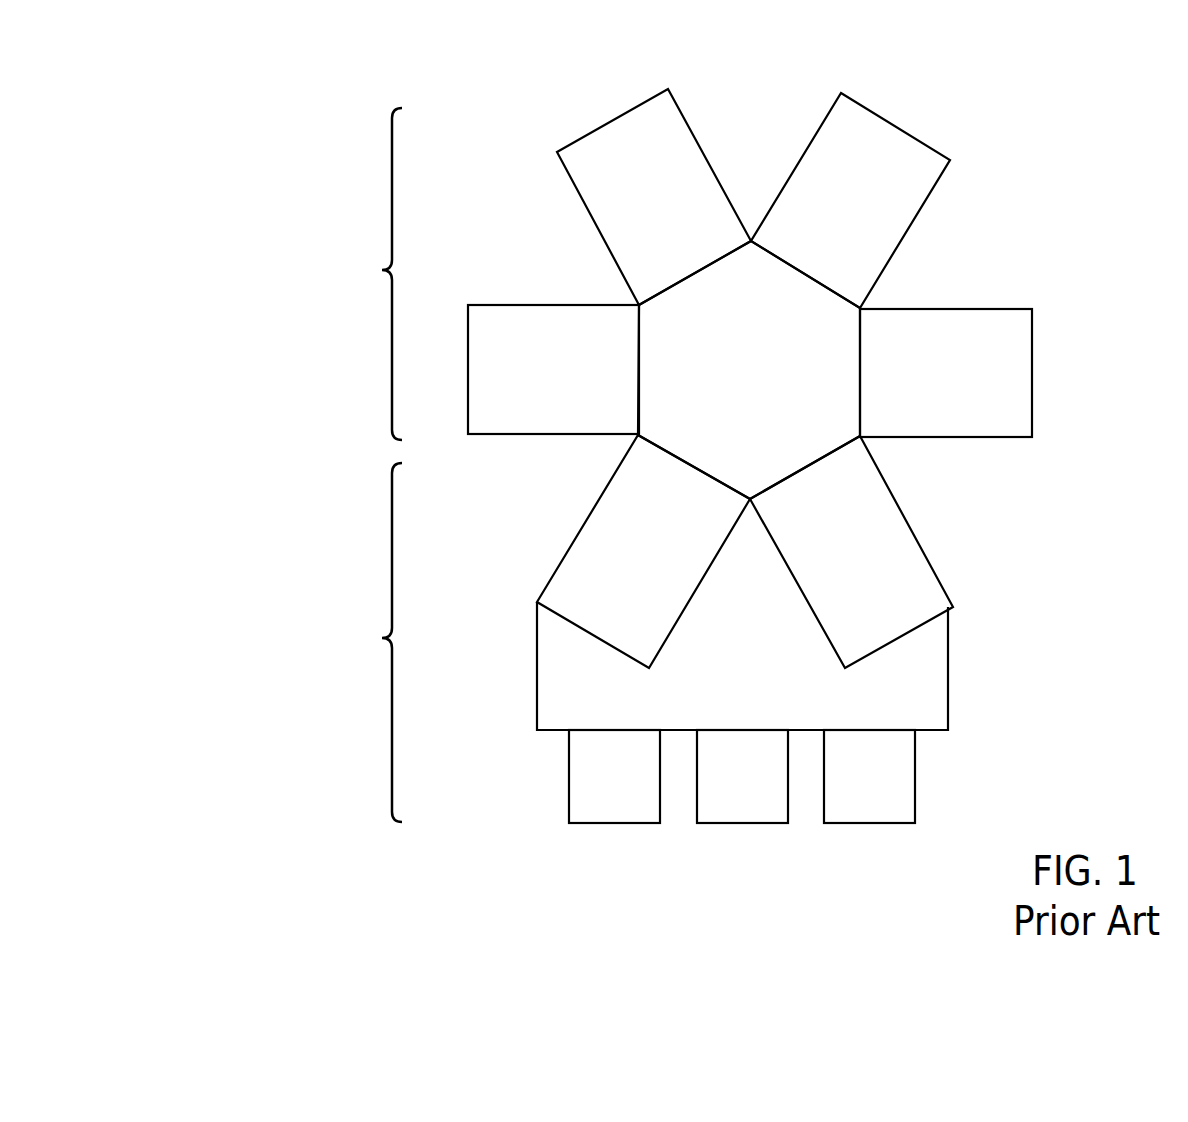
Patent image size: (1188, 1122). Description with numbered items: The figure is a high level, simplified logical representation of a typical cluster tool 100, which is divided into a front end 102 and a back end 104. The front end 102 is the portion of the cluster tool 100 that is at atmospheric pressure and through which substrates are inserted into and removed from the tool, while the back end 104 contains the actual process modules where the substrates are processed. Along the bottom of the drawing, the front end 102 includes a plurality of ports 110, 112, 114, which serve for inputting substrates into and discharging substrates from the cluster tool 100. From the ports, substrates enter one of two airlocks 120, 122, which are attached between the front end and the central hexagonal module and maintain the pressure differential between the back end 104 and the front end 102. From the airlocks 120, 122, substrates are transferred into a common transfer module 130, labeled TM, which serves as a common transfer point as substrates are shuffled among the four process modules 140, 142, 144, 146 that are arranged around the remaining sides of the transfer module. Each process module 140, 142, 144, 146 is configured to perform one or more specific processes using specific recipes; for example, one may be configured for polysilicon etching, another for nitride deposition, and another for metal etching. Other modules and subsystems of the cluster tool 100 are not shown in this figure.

The cluster tool 100 is at (273, 66).
The front end 102 is at (336, 642).
The back end 104 is at (338, 274).
The port 110 is at (614, 776).
The port 112 is at (742, 776).
The port 114 is at (869, 776).
The airlock 120 is at (643, 551).
The airlock 122 is at (851, 552).
The transfer module 130 is at (749, 370).
The process module 140 is at (553, 369).
The process module 142 is at (654, 197).
The process module 144 is at (850, 200).
The process module 146 is at (946, 373).